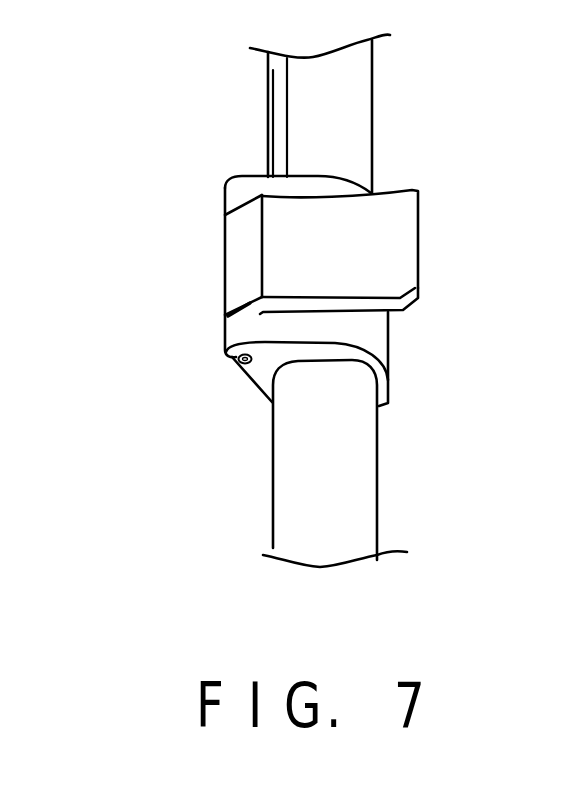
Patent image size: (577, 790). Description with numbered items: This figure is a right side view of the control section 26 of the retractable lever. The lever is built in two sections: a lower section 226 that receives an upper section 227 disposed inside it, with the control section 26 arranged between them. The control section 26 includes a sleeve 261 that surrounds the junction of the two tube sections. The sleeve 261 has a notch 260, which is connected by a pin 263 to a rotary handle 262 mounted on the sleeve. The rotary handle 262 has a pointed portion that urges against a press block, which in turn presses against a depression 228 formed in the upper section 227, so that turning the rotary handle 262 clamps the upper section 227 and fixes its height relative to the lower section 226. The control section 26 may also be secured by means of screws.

The control section 26 is at (425, 192).
The lower section 226 is at (378, 467).
The upper section 227 is at (363, 100).
The depression 228 is at (265, 122).
The notch 260 is at (247, 303).
The sleeve 261 is at (228, 188).
The rotary handle 262 is at (400, 255).
The pin 263 is at (237, 368).